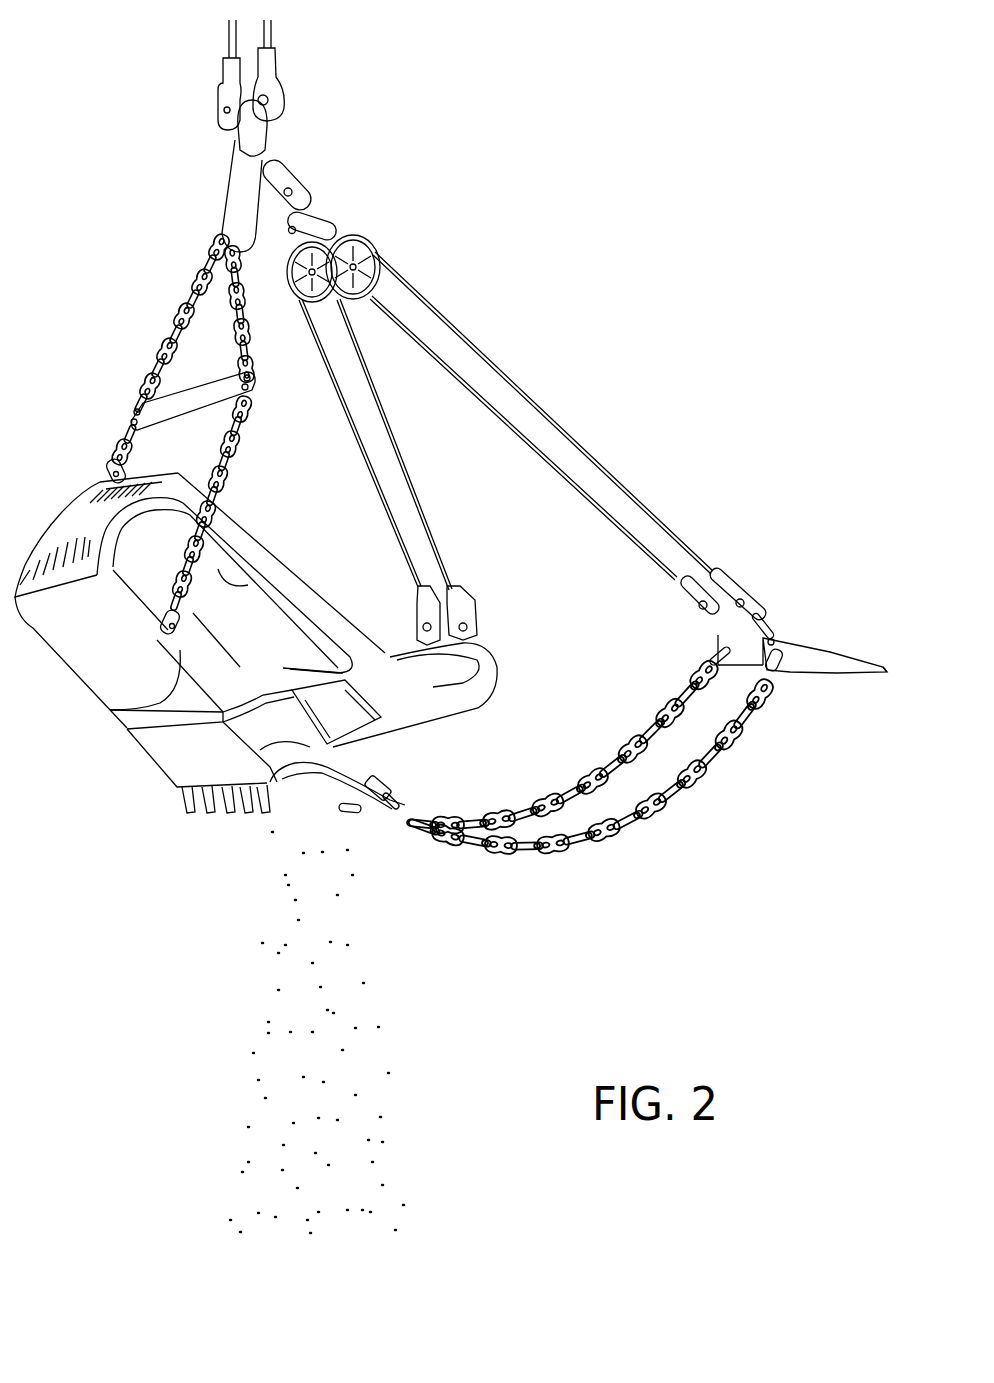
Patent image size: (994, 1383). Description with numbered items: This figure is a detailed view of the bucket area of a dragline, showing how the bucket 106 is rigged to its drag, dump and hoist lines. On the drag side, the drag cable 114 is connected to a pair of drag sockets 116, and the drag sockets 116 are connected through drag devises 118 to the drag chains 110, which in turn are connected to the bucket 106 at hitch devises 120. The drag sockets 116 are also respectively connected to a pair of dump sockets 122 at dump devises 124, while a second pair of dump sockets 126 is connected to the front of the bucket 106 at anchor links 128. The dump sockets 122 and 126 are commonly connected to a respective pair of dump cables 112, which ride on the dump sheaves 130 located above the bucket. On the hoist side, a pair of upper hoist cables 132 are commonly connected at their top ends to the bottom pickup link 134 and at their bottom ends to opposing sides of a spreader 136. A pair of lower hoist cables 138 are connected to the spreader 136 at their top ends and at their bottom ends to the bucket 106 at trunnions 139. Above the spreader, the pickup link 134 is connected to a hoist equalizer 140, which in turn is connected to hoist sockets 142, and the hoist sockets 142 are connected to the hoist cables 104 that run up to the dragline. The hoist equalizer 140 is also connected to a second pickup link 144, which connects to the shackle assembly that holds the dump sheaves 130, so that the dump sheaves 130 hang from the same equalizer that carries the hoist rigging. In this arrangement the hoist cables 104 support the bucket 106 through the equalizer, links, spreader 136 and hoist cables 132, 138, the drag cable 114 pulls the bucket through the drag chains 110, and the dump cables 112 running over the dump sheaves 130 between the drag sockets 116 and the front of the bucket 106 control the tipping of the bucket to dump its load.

The hoist cables 104 is at (237, 44).
The bucket 106 is at (168, 743).
The drag chains 110 is at (668, 797).
The dump cables 112 is at (530, 393).
The drag cable 114 is at (876, 680).
The drag sockets 116 is at (827, 648).
The drag devises 118 is at (777, 673).
The hitch devises 120 is at (398, 818).
The dump sockets 122 is at (683, 597).
The dump devises 124 is at (775, 613).
The dump sockets 126 is at (468, 598).
The anchor links 128 is at (480, 643).
The dump sheaves 130 is at (372, 243).
The upper hoist cables 132 is at (168, 325).
The pickup link 134 is at (228, 192).
The spreader 136 is at (258, 385).
The lower hoist cables 138 is at (235, 468).
The trunnions 139 is at (123, 708).
The hoist equalizer 140 is at (236, 112).
The hoist sockets 142 is at (226, 78).
The pickup link 144 is at (272, 160).